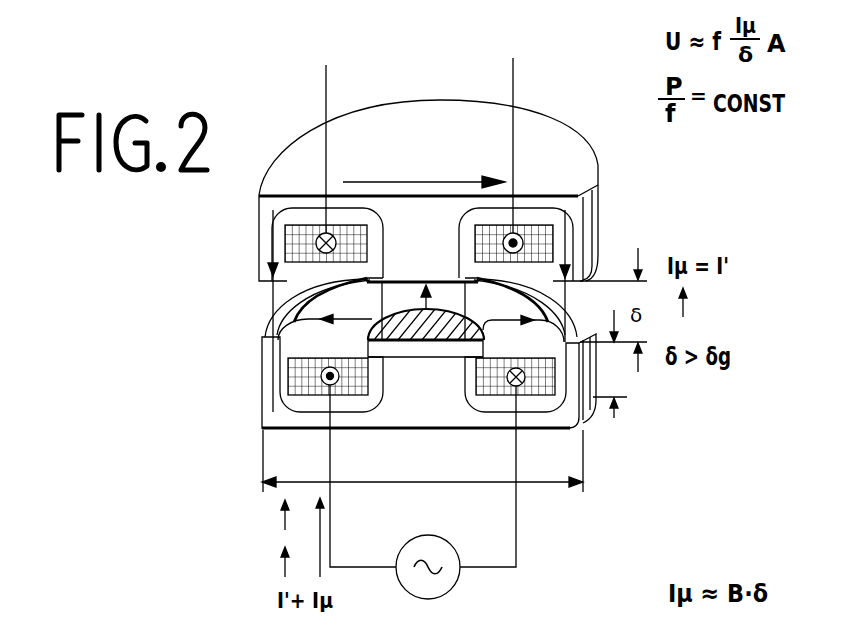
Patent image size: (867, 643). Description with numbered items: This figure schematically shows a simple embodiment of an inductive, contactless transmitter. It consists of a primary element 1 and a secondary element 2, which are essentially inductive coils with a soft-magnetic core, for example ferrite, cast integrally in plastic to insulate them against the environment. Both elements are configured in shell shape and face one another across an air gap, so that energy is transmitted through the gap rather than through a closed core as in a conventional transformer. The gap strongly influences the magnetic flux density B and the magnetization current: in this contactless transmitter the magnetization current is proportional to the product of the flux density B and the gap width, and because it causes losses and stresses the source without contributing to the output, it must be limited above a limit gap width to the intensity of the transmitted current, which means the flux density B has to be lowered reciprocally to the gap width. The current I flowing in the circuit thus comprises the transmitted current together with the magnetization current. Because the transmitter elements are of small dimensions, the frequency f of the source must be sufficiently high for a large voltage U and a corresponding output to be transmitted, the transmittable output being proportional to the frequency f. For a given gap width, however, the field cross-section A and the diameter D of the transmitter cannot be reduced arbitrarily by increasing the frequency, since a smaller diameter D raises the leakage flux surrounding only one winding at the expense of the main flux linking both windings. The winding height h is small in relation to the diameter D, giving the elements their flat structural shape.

The primary element 1 is at (273, 415).
The secondary element 2 is at (303, 157).
The field cross-section A is at (443, 327).
The magnetic flux density B is at (427, 281).
The diameter D is at (463, 480).
The winding height h is at (614, 364).
The voltage U is at (418, 160).
The current I is at (312, 48).
The frequency f is at (433, 568).